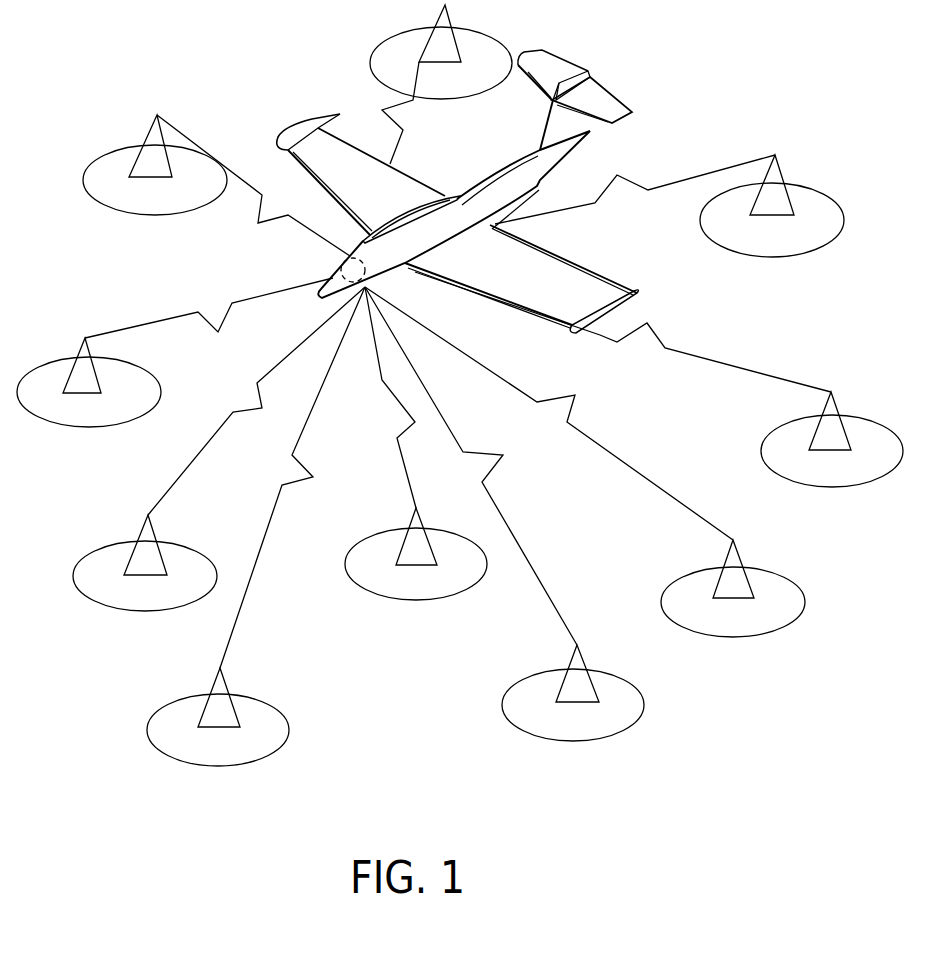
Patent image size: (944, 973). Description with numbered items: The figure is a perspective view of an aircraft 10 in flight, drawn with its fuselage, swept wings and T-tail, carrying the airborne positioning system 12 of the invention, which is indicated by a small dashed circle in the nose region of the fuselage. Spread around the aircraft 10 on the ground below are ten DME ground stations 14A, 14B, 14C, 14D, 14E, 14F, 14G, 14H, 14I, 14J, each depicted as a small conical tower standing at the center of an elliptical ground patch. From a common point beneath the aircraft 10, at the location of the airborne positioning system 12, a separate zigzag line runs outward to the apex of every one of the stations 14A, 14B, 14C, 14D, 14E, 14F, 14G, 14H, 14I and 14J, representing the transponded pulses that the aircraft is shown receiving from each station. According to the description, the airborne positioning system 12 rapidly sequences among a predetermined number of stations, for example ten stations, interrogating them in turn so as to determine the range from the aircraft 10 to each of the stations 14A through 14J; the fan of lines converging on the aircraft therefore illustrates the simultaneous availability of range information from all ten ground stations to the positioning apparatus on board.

The aircraft 10 is at (640, 133).
The airborne positioning system 12 is at (342, 267).
The DME station 14A is at (218, 675).
The DME station 14B is at (412, 567).
The DME station 14C is at (583, 660).
The DME station 14D is at (740, 553).
The DME station 14E is at (837, 400).
The DME station 14F is at (787, 173).
The DME station 14G is at (447, 13).
The DME station 14H is at (155, 130).
The DME station 14I is at (78, 353).
The DME station 14J is at (145, 528).